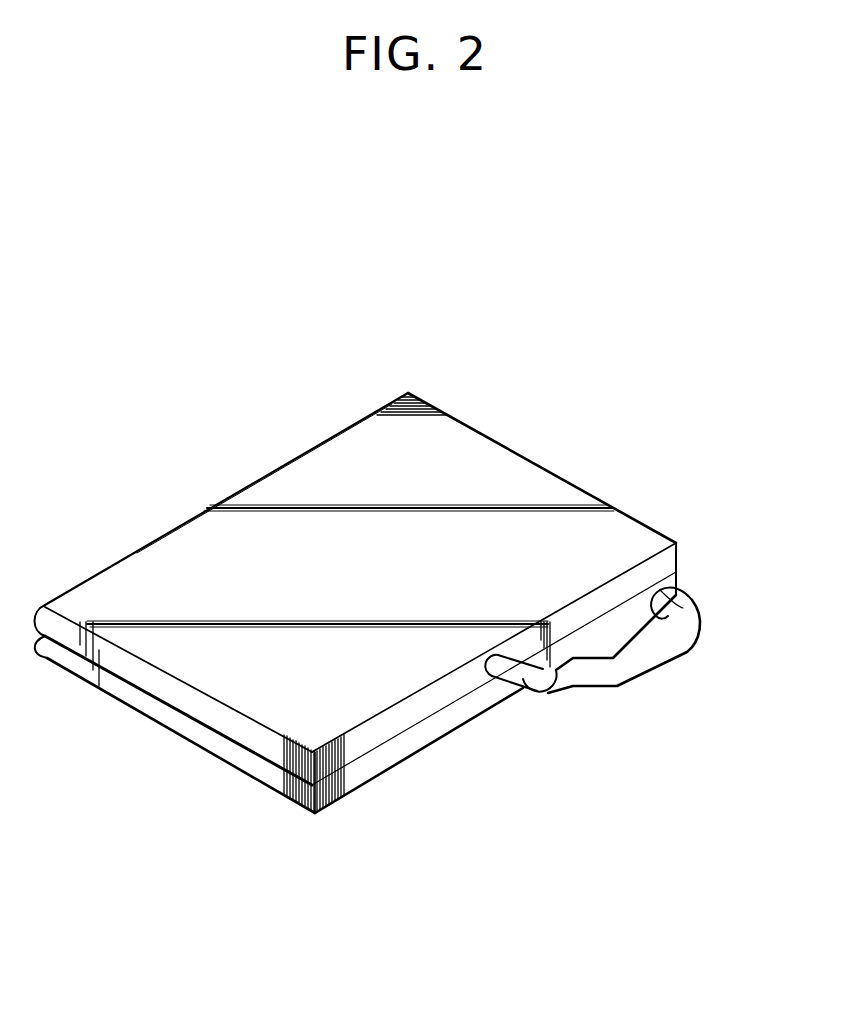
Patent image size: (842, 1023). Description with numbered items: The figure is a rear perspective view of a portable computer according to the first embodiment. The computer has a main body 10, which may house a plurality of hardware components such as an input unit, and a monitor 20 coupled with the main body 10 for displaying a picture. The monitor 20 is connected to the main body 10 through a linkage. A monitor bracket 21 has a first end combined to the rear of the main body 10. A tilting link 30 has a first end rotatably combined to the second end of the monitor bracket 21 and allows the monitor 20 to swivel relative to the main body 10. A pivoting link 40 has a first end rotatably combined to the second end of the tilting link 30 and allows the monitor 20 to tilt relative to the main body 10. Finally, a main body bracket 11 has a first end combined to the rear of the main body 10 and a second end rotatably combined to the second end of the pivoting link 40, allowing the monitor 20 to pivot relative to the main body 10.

The main body 10 is at (385, 772).
The monitor 20 is at (550, 478).
The monitor bracket 21 is at (510, 690).
The tilting link 30 is at (553, 693).
The pivoting link 40 is at (676, 650).
The main body bracket 11 is at (668, 600).